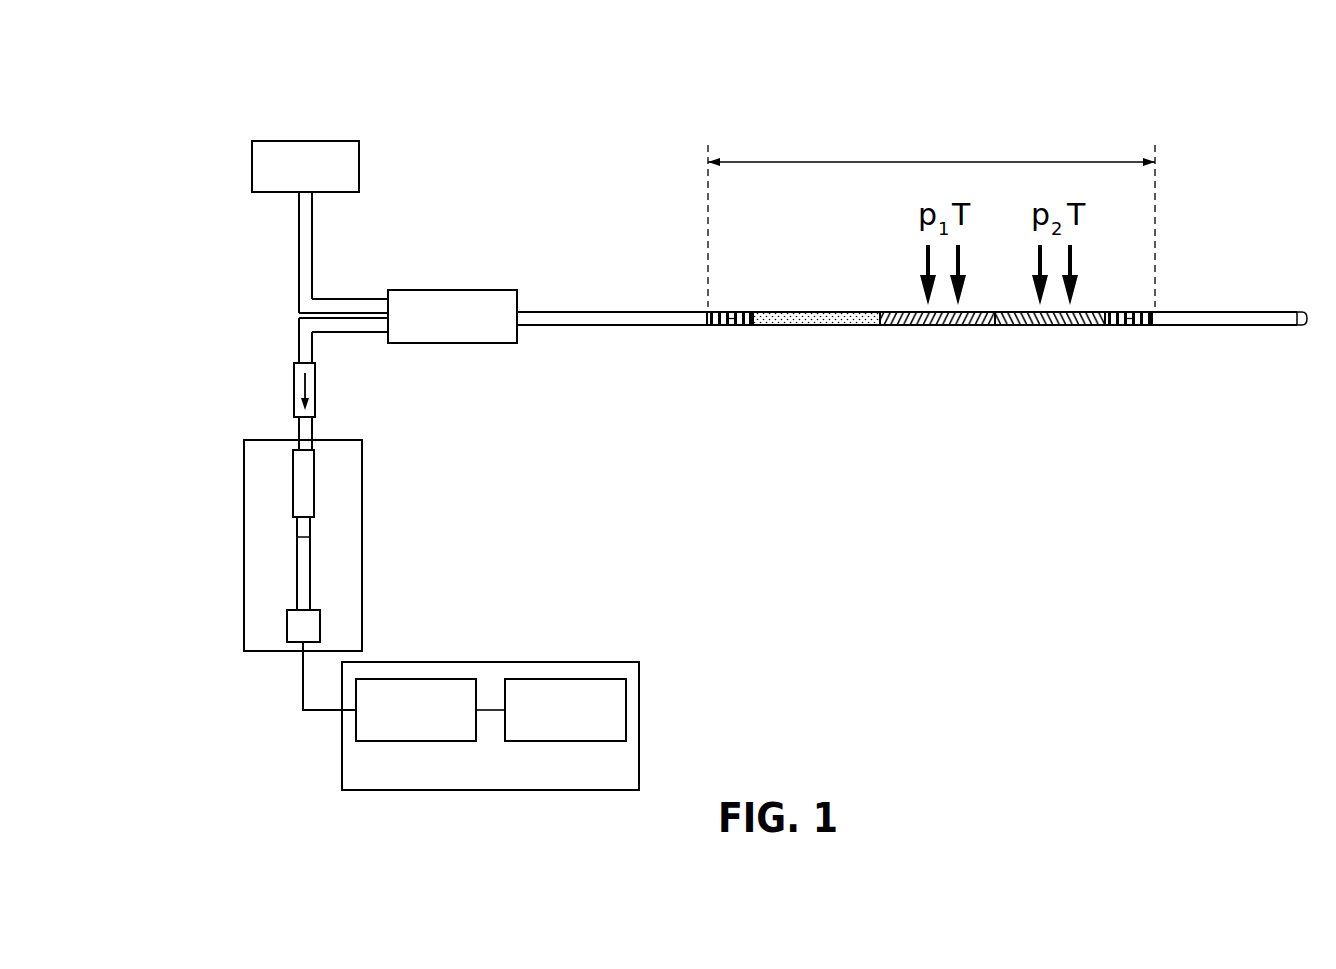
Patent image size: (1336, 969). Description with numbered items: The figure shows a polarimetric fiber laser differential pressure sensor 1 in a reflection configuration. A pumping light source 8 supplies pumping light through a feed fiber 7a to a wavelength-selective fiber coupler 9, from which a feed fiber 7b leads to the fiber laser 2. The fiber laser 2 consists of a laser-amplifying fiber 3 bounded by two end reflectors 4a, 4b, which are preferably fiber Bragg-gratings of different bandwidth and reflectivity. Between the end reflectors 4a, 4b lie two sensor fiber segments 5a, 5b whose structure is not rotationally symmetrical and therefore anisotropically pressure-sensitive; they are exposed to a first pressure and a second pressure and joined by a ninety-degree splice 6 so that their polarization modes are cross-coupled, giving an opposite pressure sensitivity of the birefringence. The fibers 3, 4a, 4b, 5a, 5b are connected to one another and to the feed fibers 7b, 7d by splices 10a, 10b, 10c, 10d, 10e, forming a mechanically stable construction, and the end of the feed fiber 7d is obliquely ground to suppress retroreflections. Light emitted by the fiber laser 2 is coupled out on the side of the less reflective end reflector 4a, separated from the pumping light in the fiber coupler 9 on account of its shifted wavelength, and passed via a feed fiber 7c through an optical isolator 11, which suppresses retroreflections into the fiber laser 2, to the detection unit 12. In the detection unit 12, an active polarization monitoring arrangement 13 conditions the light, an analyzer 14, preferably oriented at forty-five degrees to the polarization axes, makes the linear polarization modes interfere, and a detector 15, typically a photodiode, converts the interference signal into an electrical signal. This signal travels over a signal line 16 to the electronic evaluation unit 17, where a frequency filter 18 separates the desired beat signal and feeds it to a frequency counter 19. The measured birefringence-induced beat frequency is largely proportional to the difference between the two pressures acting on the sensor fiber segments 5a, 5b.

The fiber laser differential pressure sensor 1 is at (235, 70).
The fiber laser 2 is at (931, 218).
The laser-amplifying fiber 3 is at (805, 320).
The end reflector 4a is at (727, 325).
The end reflector 4b is at (1130, 330).
The sensor fiber segment 5a is at (938, 318).
The sensor fiber segment 5b is at (1073, 318).
The 90° splice 6 is at (995, 322).
The feed fiber 7a is at (350, 307).
The feed fiber 7b is at (627, 318).
The feed fiber 7c is at (350, 325).
The feed fiber 7d is at (1267, 322).
The pumping light source 8 is at (314, 181).
The fiber coupler 9 is at (461, 332).
The splice 10a is at (703, 307).
The splice 10b is at (754, 307).
The splice 10c is at (877, 308).
The splice 10d is at (1108, 309).
The splice 10e is at (1158, 309).
The optical isolator 11 is at (300, 372).
The detection unit 12 is at (286, 478).
The active polarization monitoring arrangement 13 is at (303, 505).
The analyzer 14 is at (305, 560).
The detector 15 is at (304, 623).
The signal line 16 is at (302, 698).
The electronic evaluation unit 17 is at (394, 782).
The frequency filter 18 is at (432, 723).
The frequency counter 19 is at (582, 723).